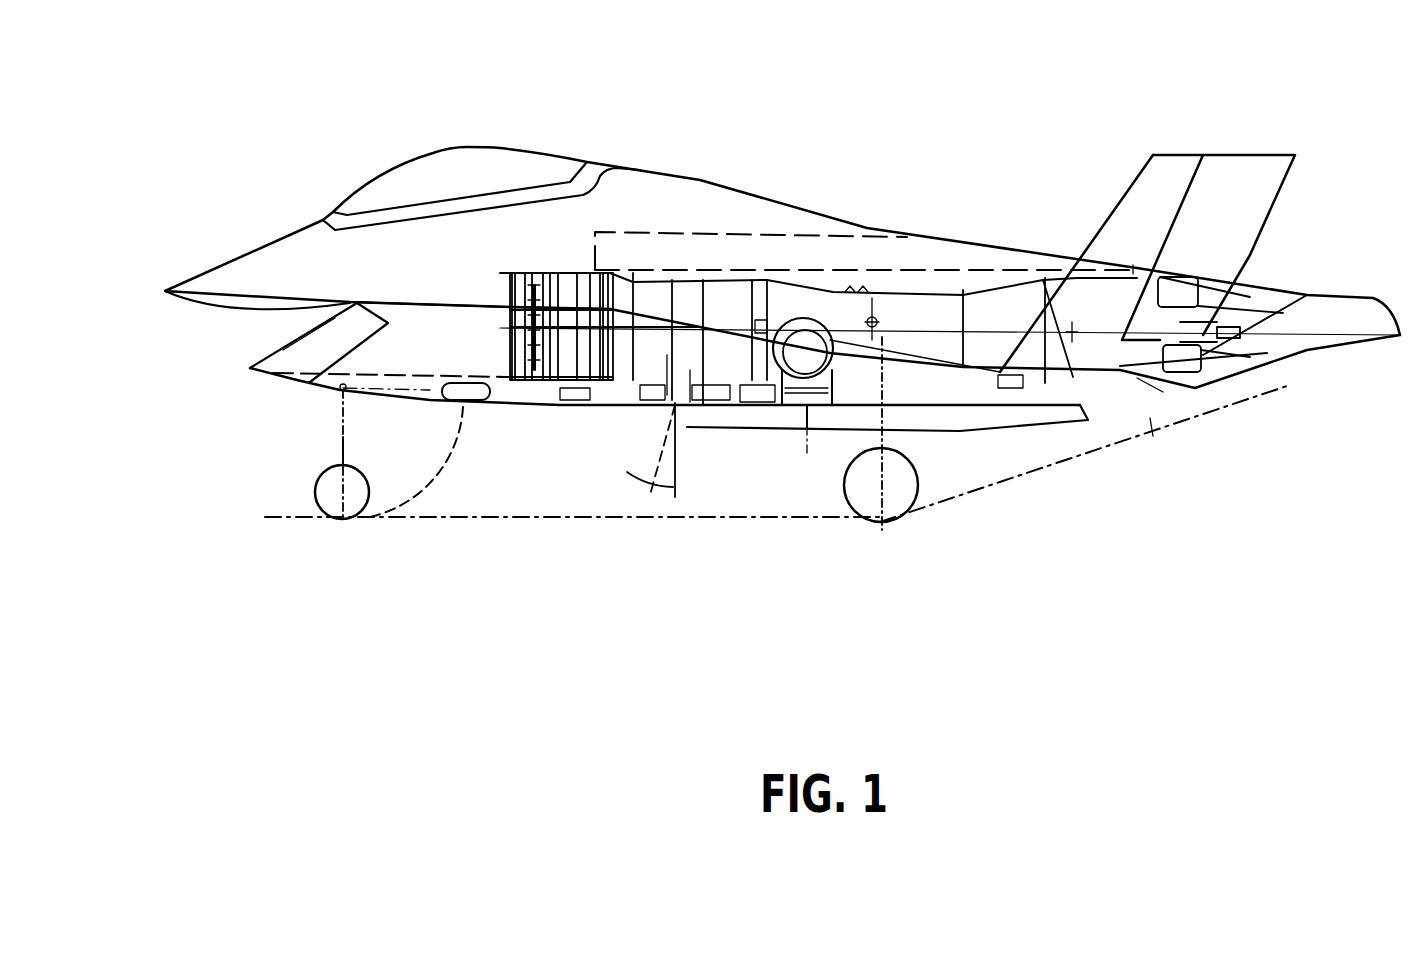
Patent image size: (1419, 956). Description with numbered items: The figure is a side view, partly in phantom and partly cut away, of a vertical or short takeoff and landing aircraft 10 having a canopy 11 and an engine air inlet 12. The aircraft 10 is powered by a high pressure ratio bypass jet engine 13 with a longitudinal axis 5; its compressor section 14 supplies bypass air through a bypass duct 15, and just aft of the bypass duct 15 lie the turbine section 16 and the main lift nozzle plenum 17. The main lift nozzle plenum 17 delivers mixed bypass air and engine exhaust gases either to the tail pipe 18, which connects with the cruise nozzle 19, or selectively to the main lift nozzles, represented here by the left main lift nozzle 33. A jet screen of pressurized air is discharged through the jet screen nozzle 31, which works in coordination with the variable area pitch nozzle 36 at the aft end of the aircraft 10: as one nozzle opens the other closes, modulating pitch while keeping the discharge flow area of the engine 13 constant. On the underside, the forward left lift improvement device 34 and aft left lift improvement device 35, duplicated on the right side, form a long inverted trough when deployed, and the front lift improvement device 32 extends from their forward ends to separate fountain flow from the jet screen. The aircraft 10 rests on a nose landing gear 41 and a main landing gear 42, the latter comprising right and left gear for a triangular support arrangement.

The longitudinal axis 5 is at (900, 297).
The vertical or short takeoff and landing aircraft 10 is at (472, 264).
The canopy 11 is at (424, 154).
The engine air inlet 12 is at (250, 367).
The high pressure ratio bypass jet engine 13 is at (694, 315).
The compressor section 14 is at (588, 280).
The bypass duct 15 is at (672, 282).
The turbine section 16 is at (722, 273).
The main lift nozzle plenum 17 is at (807, 287).
The tail pipe 18 is at (940, 290).
The cruise nozzle 19 is at (1120, 277).
The jet screen nozzle 31 is at (675, 403).
The front lift improvement device 32 is at (675, 430).
The left main lift nozzle 33 is at (797, 407).
The forward left lift improvement device 34 is at (832, 417).
The aft left lift improvement device 35 is at (967, 417).
The variable area pitch nozzle 36 is at (1150, 390).
The nose landing gear 41 is at (332, 516).
The main landing gear 42 is at (900, 527).